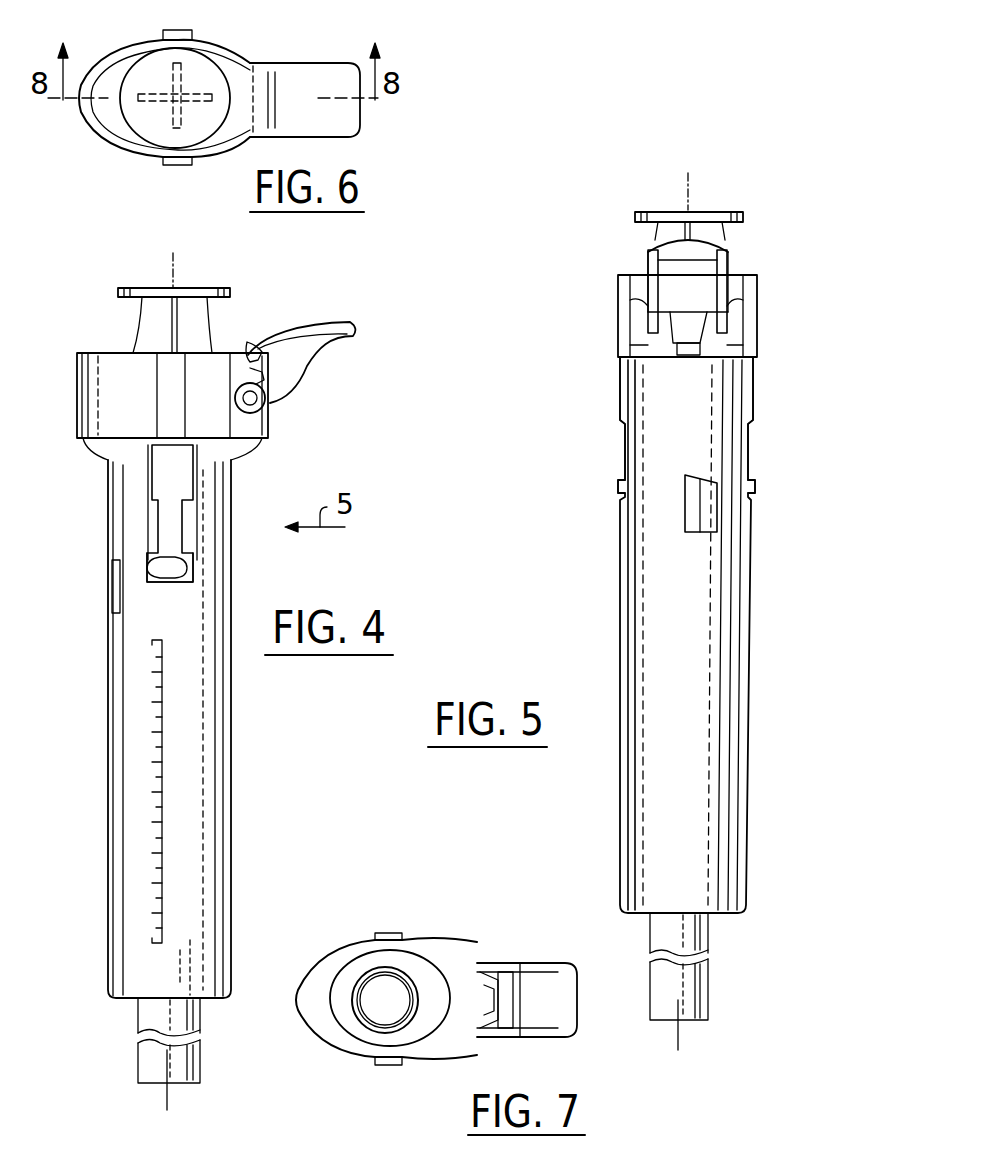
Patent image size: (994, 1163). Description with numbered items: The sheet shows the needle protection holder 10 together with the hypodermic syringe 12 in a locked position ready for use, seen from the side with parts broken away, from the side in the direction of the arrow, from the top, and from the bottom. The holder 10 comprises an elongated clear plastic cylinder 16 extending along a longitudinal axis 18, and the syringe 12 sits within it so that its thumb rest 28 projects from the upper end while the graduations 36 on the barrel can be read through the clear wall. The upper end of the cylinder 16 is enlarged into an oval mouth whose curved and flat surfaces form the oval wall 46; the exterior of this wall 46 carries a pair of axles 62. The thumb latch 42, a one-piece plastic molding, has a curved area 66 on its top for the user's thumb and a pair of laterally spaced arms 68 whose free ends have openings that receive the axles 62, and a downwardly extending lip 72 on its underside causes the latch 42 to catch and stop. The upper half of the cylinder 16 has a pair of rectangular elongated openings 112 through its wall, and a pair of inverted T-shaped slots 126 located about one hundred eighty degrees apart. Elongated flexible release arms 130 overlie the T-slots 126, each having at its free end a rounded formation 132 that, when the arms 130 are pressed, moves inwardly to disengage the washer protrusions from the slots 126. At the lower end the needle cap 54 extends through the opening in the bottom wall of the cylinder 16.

In FIG. 4, the needle protection holder 10 is at (76, 843).
In FIG. 5, the needle protection holder 10 is at (727, 635).
In FIG. 6, the hypodermic syringe 12 is at (180, 90).
In FIG. 4, the hypodermic syringe 12 is at (137, 325).
In FIG. 5, the hypodermic syringe 12 is at (658, 230).
In FIG. 5, the elongated cylinder 16 is at (746, 813).
In FIG. 7, the elongated cylinder 16 is at (423, 960).
In FIG. 4, the extending axis 18 is at (177, 265).
In FIG. 5, the extending axis 18 is at (692, 188).
In FIG. 6, the thumb rest 28 is at (157, 133).
In FIG. 5, the thumb rest 28 is at (743, 213).
In FIG. 4, the graduations 36 is at (158, 657).
In FIG. 6, the thumb latch 42 is at (366, 127).
In FIG. 4, the thumb latch 42 is at (316, 350).
In FIG. 7, the thumb latch 42 is at (573, 1038).
In FIG. 6, the oval wall 46 is at (82, 127).
In FIG. 4, the oval wall 46 is at (108, 410).
In FIG. 4, the needle cap 54 is at (145, 1047).
In FIG. 7, the needle cap 54 is at (365, 1025).
In FIG. 4, the axles 62 is at (257, 402).
In FIG. 4, the curved area 66 is at (307, 325).
In FIG. 5, the arms 68 is at (650, 265).
In FIG. 4, the lip 72 is at (247, 342).
In FIG. 5, the elongated openings 112 is at (710, 523).
In FIG. 4, the inverted T-shaped slots 126 is at (148, 573).
In FIG. 4, the flexible release arms 130 is at (167, 488).
In FIG. 5, the flexible release arms 130 is at (622, 400).
In FIG. 4, the rounded formation 132 is at (187, 568).
In FIG. 5, the rounded formation 132 is at (618, 490).